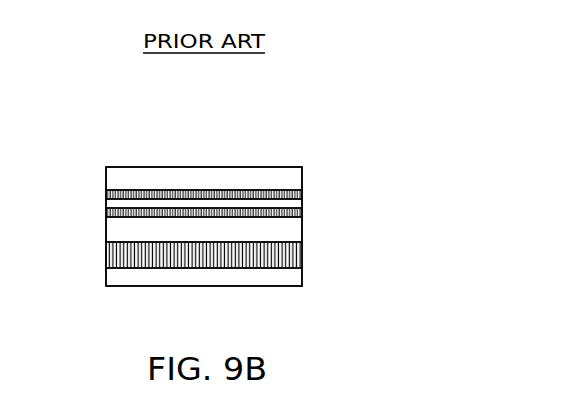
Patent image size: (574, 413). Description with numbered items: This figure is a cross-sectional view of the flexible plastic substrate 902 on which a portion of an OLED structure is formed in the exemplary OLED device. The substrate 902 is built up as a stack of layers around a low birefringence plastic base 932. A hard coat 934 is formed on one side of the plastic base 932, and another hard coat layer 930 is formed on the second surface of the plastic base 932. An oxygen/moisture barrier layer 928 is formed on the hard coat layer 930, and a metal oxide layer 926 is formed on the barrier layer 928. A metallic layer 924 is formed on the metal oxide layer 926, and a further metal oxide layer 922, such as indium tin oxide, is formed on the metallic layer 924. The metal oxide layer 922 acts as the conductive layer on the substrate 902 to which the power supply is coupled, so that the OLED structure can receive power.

The flexible plastic substrate 902 is at (372, 63).
The metal oxide layer 922 is at (302, 180).
The metallic layer 924 is at (302, 193).
The metal oxide layer 926 is at (302, 205).
The oxygen/moisture barrier layer 928 is at (106, 214).
The hard coat layer 930 is at (106, 228).
The low birefringence plastic base 932 is at (106, 253).
The hard coat 934 is at (302, 275).